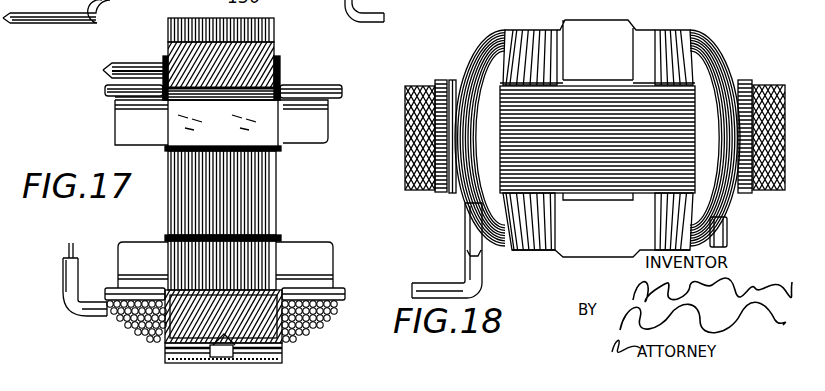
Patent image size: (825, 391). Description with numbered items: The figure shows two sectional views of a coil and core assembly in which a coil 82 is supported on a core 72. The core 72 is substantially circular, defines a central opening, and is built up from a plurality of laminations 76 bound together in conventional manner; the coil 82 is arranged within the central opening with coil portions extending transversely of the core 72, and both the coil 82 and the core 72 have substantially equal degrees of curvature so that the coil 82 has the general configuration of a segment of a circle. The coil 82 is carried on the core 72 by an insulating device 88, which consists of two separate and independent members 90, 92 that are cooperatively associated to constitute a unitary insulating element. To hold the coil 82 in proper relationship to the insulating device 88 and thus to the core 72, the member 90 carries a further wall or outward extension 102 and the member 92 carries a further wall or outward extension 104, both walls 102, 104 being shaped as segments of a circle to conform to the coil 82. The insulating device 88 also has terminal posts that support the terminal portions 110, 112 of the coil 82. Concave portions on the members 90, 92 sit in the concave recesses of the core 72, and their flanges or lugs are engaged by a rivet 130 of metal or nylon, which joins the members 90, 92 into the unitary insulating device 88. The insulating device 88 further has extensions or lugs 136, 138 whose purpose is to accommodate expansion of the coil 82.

In FIG. 17, the core 72 is at (286, 190).
In FIG. 18, the core 72 is at (415, 203).
In FIG. 17, the laminations 76 is at (277, 212).
In FIG. 18, the laminations 76 is at (405, 148).
In FIG. 17, the coil 82 is at (126, 340).
In FIG. 18, the coil 82 is at (727, 228).
In FIG. 17, the insulating device 88 is at (315, 71).
In FIG. 18, the insulating device 88 is at (524, 262).
In FIG. 18, the member 90 is at (700, 252).
In FIG. 18, the member 92 is at (655, 30).
In FIG. 17, the further wall 102 is at (117, 108).
In FIG. 18, the further wall 102 is at (545, 255).
In FIG. 17, the further wall 104 is at (330, 120).
In FIG. 18, the further wall 104 is at (541, 30).
In FIG. 17, the terminal portion 110 is at (40, 25).
In FIG. 17, the terminal portion 112 is at (376, 11).
In FIG. 17, the rivet 130 is at (282, 348).
In FIG. 17, the extension or lug 136 is at (105, 88).
In FIG. 18, the extension or lug 136 is at (607, 258).
In FIG. 17, the extension or lug 138 is at (341, 90).
In FIG. 18, the extension or lug 138 is at (590, 21).